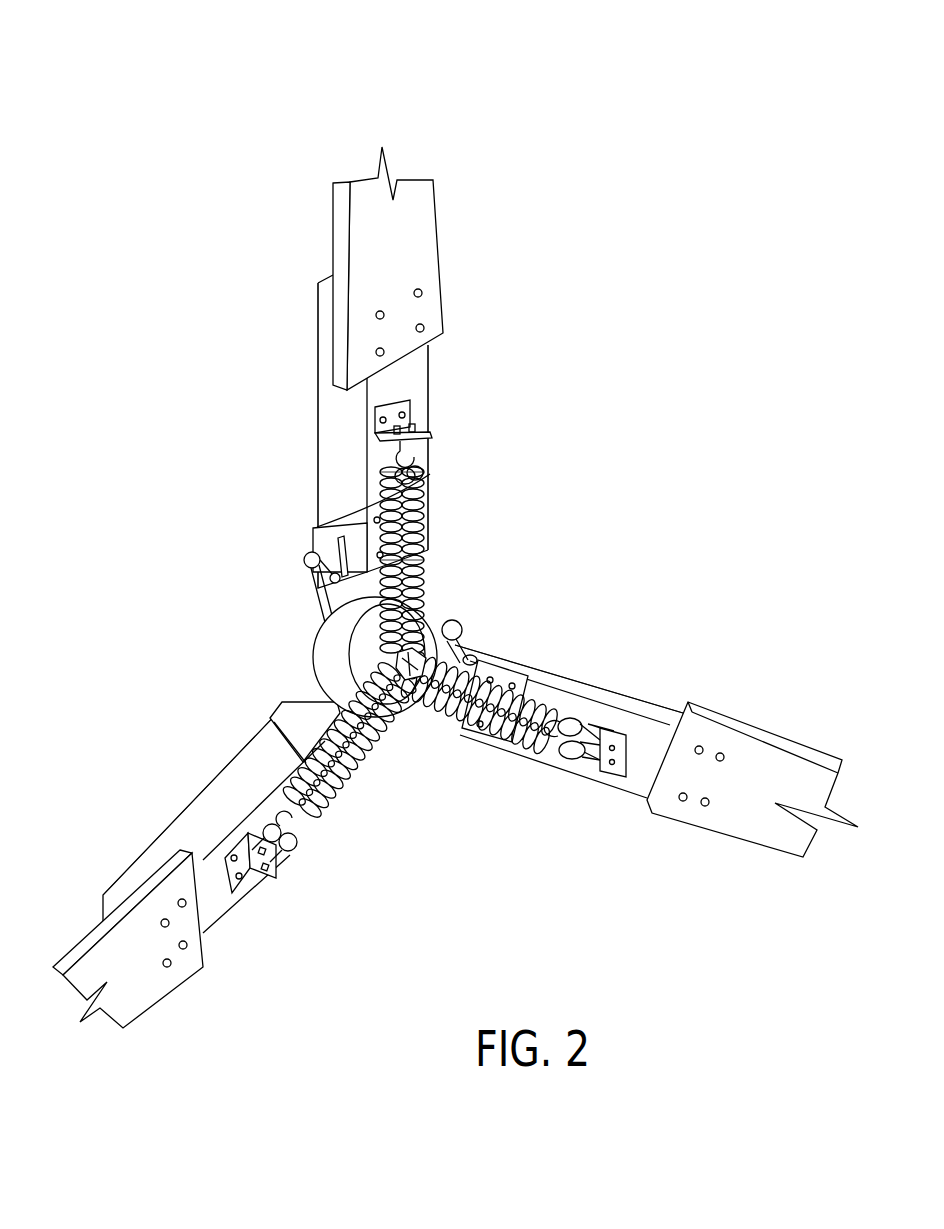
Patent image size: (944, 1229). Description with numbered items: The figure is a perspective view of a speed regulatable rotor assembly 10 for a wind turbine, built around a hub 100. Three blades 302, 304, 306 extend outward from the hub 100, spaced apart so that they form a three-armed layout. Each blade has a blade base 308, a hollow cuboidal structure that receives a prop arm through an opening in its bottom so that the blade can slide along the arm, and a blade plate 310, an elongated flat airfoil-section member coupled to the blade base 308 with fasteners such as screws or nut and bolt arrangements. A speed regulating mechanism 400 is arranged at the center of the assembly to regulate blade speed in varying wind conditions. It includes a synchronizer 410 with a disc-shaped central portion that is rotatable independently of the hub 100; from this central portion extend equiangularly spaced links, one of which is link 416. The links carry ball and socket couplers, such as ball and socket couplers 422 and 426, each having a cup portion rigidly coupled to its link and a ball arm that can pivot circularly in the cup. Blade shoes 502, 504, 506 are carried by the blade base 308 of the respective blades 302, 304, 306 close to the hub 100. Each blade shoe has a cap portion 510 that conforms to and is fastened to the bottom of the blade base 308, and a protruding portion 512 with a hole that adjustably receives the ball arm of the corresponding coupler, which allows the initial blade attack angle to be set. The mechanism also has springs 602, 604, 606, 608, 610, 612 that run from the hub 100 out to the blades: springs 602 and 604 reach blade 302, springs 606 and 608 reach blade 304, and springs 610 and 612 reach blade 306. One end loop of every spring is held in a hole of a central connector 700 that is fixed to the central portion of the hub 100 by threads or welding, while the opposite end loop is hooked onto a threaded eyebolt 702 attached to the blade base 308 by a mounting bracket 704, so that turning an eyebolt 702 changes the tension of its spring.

The rotor assembly 10 is at (748, 105).
The hub 100 is at (330, 657).
The blade 302 is at (312, 358).
The blade 304 is at (136, 831).
The blade 306 is at (667, 682).
The blade base 308 is at (338, 424).
The blade plate 310 is at (428, 238).
The speed regulating mechanism 400 is at (440, 584).
The synchronizer 410 is at (303, 598).
The link 416 is at (328, 620).
The ball and socket coupler 422 is at (303, 554).
The ball and socket coupler 426 is at (452, 626).
The blade shoe 502 is at (440, 481).
The blade shoe 504 is at (275, 736).
The blade shoe 506 is at (520, 651).
The cap portion 510 is at (343, 527).
The protruding portion 512 is at (317, 528).
The spring 602 is at (433, 506).
The spring 604 is at (436, 546).
The spring 606 is at (350, 778).
The spring 608 is at (330, 812).
The spring 610 is at (512, 740).
The spring 612 is at (547, 747).
The central connector 700 is at (405, 683).
The threaded eyebolt 702 is at (425, 455).
The mounting bracket 704 is at (420, 410).